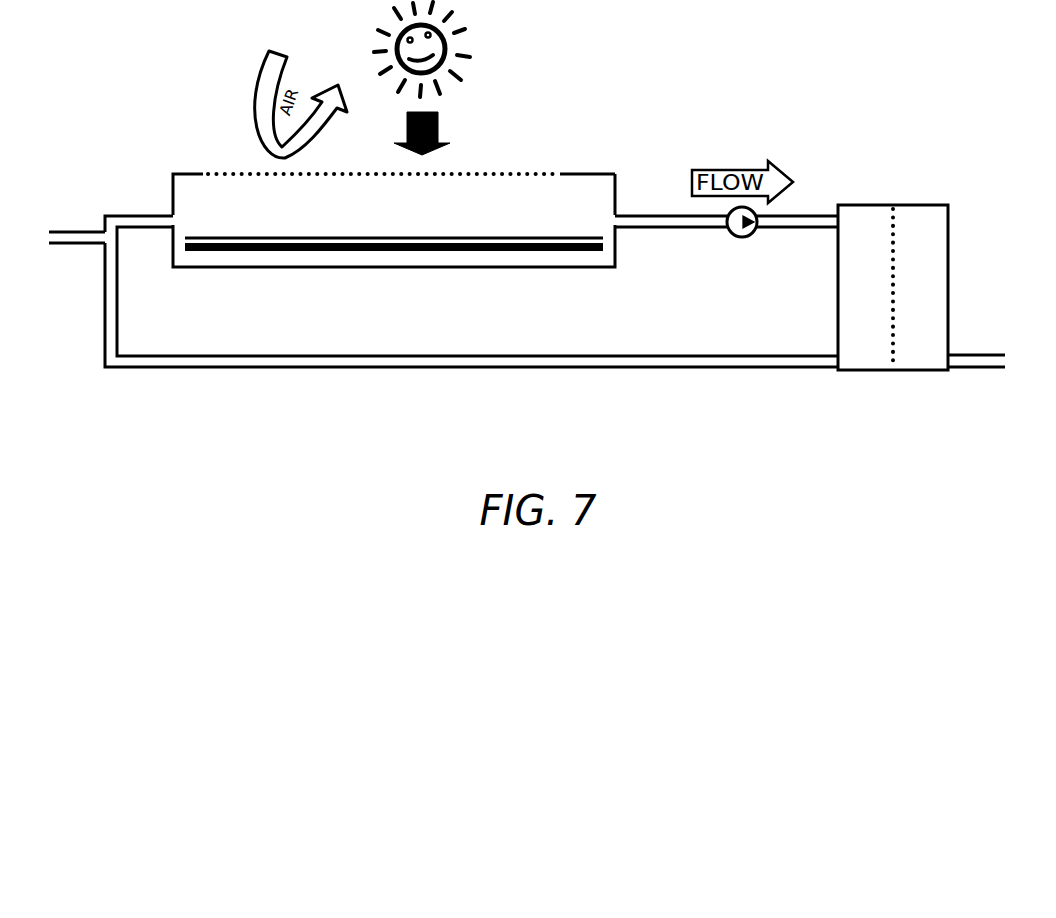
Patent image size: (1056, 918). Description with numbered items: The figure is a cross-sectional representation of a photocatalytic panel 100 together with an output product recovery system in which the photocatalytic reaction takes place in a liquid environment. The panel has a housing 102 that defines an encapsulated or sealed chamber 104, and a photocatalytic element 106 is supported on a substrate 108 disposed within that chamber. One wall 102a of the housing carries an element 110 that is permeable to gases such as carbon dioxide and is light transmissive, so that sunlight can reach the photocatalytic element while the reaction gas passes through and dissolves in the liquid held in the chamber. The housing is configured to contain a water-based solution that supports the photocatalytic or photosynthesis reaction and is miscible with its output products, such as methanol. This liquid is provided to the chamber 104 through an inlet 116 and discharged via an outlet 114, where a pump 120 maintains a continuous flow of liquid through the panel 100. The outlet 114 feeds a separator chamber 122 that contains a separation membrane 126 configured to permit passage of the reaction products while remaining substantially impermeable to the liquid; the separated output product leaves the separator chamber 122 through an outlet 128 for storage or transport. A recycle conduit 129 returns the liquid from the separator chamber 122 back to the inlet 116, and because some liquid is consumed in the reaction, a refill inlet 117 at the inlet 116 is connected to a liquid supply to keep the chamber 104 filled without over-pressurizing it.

The photocatalytic panel 100 is at (546, 268).
The housing 102 is at (617, 188).
The wall of the housing 102a is at (582, 173).
The chamber 104 is at (503, 216).
The photocatalytic element 106 is at (302, 237).
The substrate 108 is at (402, 251).
The permeable and light transmissive element 110 is at (495, 173).
The outlet 114 is at (652, 228).
The inlet 116 is at (138, 215).
The refill inlet 117 is at (80, 231).
The pump 120 is at (738, 236).
The separator chamber 122 is at (915, 205).
The separation membrane 126 is at (893, 348).
The outlet 128 is at (975, 355).
The recycle conduit 129 is at (802, 368).